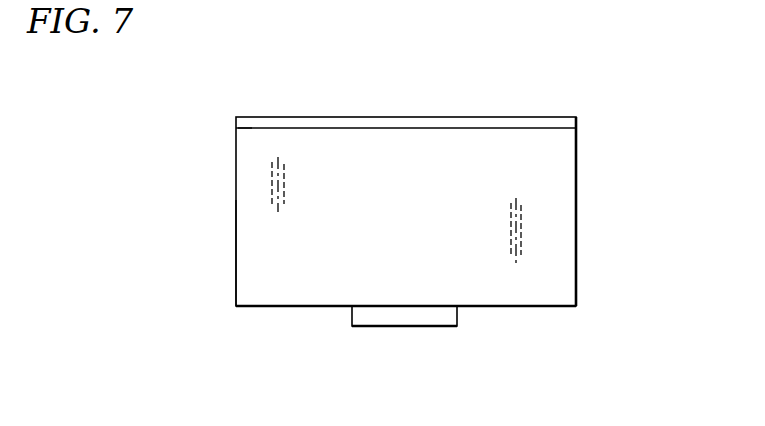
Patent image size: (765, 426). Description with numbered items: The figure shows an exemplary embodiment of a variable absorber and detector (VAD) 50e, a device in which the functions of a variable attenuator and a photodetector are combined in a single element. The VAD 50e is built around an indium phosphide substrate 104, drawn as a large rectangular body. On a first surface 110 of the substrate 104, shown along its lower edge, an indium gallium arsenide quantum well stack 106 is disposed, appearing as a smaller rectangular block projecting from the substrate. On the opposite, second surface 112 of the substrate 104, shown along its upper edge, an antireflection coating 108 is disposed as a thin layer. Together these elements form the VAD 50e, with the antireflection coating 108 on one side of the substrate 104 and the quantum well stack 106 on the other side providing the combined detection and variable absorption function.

The variable absorber and detector (VAD) 50e is at (600, 132).
The indium phosphide substrate 104 is at (417, 235).
The indium gallium arsenide quantum well stack 106 is at (435, 322).
The antireflection coating 108 is at (268, 122).
The first surface 110 is at (252, 308).
The second surface 112 is at (252, 128).